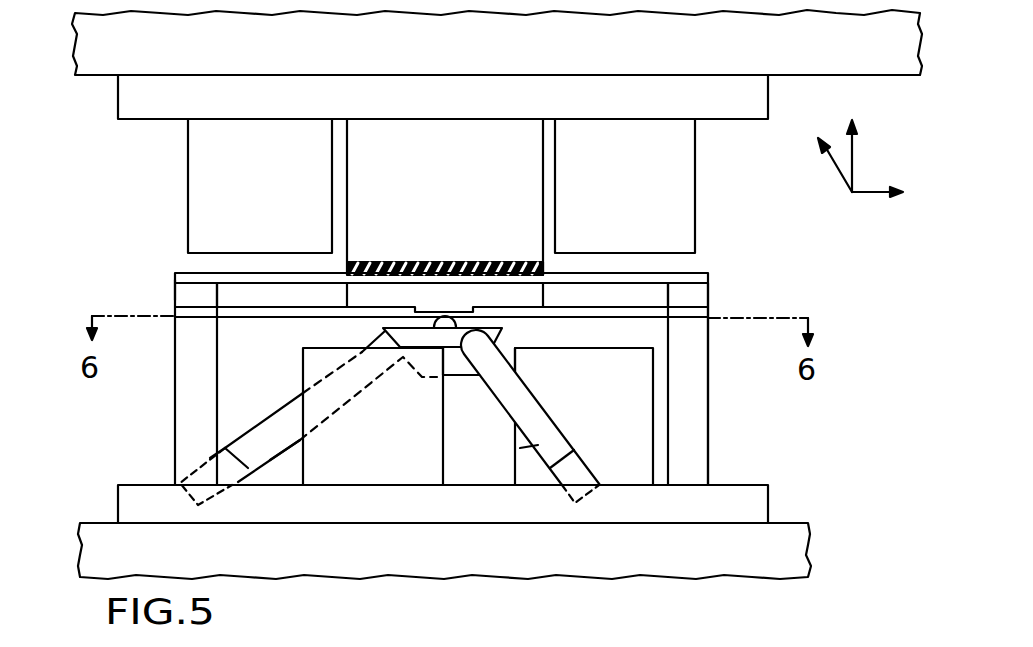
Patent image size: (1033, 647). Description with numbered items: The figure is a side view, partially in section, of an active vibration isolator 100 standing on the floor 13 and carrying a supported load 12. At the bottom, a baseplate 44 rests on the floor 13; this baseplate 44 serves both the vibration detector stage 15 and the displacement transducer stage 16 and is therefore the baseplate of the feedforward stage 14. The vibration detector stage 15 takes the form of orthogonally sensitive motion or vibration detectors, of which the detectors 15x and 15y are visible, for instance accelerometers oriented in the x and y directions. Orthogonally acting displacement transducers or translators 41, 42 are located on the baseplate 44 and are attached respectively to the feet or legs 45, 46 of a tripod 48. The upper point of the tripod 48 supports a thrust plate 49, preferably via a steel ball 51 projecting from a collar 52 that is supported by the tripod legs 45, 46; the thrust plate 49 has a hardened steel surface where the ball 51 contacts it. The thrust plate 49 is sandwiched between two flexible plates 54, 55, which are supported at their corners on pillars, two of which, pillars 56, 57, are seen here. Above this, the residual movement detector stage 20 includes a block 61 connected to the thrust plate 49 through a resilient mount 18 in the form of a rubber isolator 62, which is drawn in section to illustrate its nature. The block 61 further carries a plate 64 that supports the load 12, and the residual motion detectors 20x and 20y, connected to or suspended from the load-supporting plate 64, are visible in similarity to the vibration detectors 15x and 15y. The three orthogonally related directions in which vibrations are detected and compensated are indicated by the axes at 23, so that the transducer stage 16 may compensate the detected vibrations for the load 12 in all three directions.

The load 12 is at (491, 60).
The floor 13 is at (456, 559).
The feedforward stage 14 is at (430, 360).
The vibration detector stage 15 is at (680, 450).
The vibration detector 15x is at (355, 438).
The vibration detector 15y is at (568, 403).
The displacement transducer stage 16 is at (192, 458).
The resilient mount 18 is at (560, 268).
The residual movement detector stage 20 is at (382, 190).
The residual motion detector 20x is at (282, 198).
The residual motion detector 20y is at (656, 198).
The three orthogonally related directions 23 is at (858, 158).
The displacement transducer 41 is at (222, 455).
The displacement transducer 42 is at (590, 467).
The baseplate 44 is at (770, 500).
The tripod foot or leg 45 is at (300, 445).
The tripod foot or leg 46 is at (538, 445).
The tripod 48 is at (456, 424).
The thrust plate 49 is at (431, 310).
The steel ball 51 is at (437, 323).
The collar 52 is at (500, 334).
The flexible plate 54 is at (293, 318).
The flexible plate 55 is at (220, 273).
The pillar 56 is at (175, 343).
The pillar 57 is at (710, 415).
The block 61 is at (422, 184).
The rubber isolator 62 is at (430, 262).
The load-supporting plate 64 is at (123, 98).
The isolator 100 is at (140, 294).